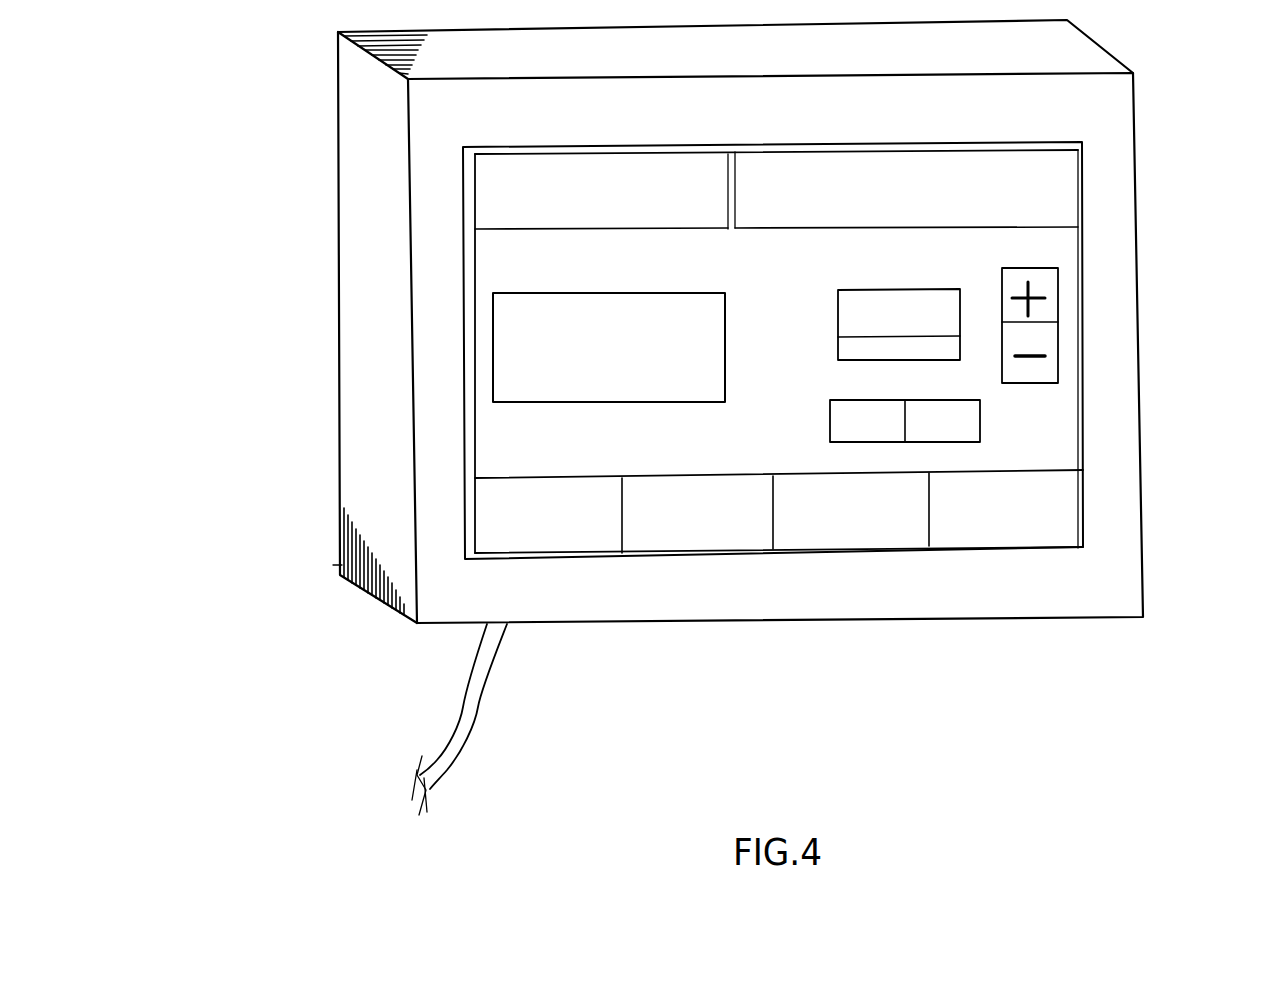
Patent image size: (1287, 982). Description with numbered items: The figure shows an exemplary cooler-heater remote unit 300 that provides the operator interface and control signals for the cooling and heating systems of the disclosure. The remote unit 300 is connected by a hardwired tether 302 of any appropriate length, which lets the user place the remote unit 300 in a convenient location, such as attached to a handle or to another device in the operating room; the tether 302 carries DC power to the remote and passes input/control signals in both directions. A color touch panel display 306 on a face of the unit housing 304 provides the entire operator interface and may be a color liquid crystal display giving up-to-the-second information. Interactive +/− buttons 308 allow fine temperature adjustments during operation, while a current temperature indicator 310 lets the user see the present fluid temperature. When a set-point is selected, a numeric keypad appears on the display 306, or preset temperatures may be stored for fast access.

The remote unit 300 is at (1178, 283).
The tether 302 is at (473, 707).
The unit housing 304 is at (1125, 580).
The touch panel display 306 is at (1065, 255).
The +/− buttons 308 is at (1058, 363).
The current temperature indicator 310 is at (513, 362).